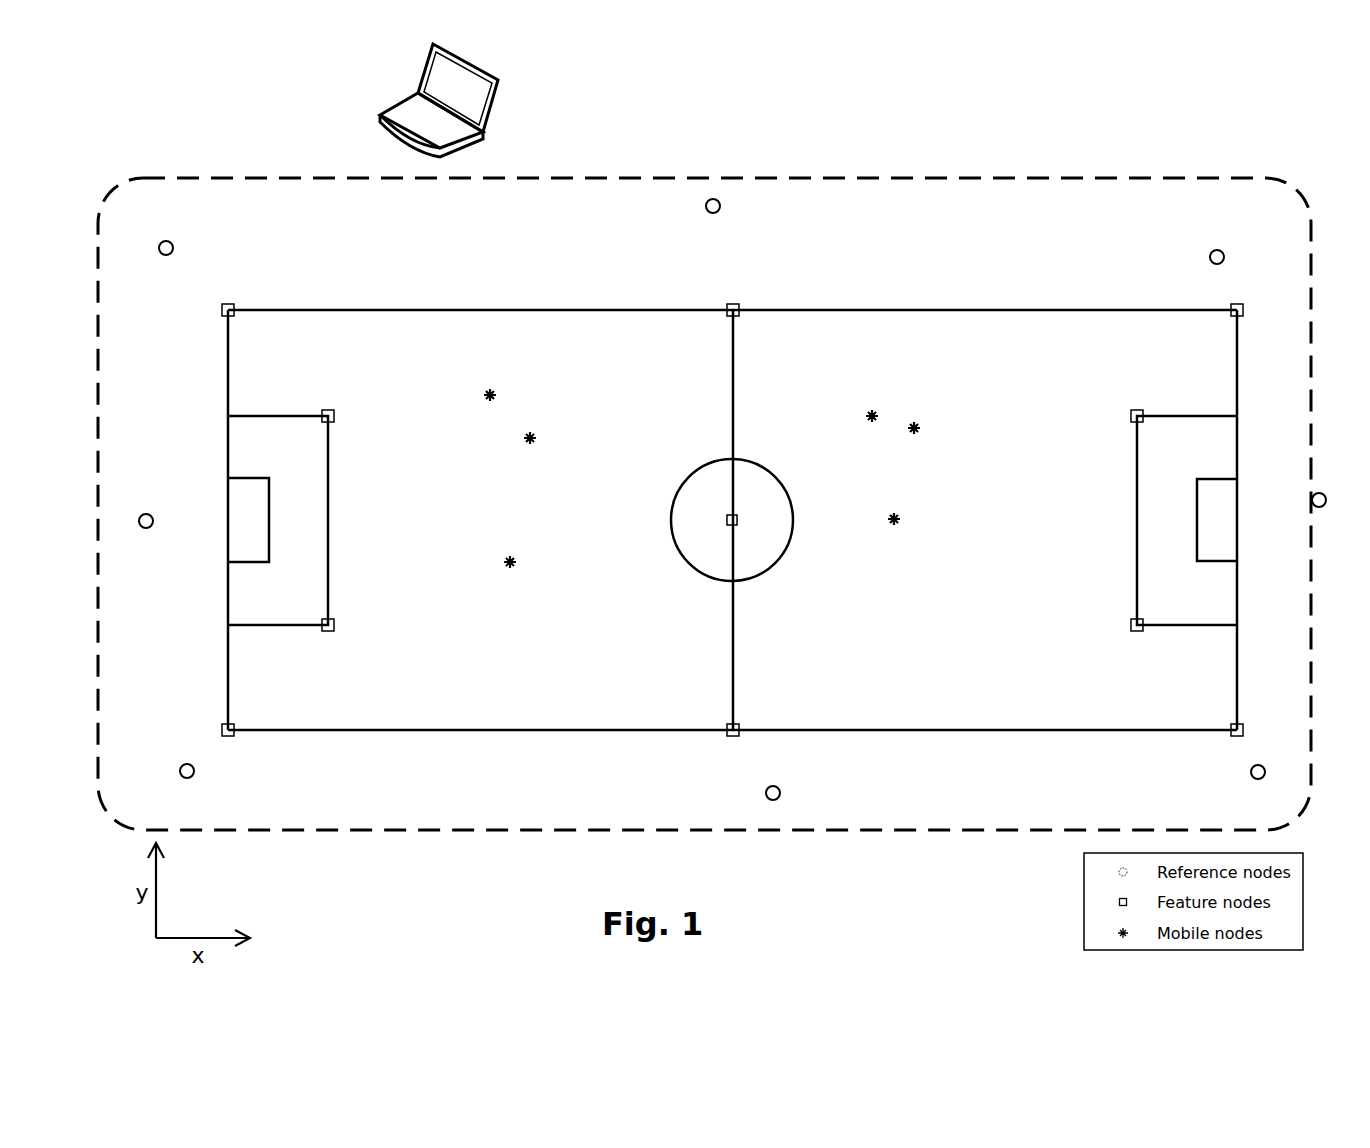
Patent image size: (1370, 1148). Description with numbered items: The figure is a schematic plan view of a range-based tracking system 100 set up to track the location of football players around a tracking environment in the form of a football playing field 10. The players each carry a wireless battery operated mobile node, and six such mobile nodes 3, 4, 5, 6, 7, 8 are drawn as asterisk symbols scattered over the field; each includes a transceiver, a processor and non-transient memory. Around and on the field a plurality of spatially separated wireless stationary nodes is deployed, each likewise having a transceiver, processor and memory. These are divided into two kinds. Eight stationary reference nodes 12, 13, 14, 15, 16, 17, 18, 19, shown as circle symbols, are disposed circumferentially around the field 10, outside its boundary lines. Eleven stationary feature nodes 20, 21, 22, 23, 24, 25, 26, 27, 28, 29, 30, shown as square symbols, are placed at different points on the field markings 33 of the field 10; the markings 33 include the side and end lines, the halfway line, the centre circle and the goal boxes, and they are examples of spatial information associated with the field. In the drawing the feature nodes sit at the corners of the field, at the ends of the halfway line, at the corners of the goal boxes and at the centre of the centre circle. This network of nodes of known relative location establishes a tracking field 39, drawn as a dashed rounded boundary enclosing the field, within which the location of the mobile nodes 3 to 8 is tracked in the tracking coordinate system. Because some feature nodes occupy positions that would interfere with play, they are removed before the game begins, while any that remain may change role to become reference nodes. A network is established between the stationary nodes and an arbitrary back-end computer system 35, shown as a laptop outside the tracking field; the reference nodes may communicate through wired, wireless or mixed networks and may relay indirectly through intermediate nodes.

The system 100 is at (809, 139).
The tracking field 39 is at (983, 176).
The football playing field 10 is at (767, 514).
The field markings 33 is at (469, 308).
The back-end computer system 35 is at (398, 100).
The mobile node 3 is at (491, 387).
The mobile node 4 is at (533, 430).
The mobile node 5 is at (513, 554).
The mobile node 6 is at (876, 408).
The mobile node 7 is at (916, 421).
The mobile node 8 is at (897, 511).
The stationary reference node 12 is at (168, 240).
The stationary reference node 13 is at (148, 513).
The stationary reference node 14 is at (187, 763).
The stationary reference node 15 is at (775, 785).
The stationary reference node 16 is at (1260, 764).
The stationary reference node 17 is at (1318, 492).
The stationary reference node 18 is at (1217, 249).
The stationary reference node 19 is at (713, 198).
The stationary feature node 20 is at (231, 304).
The stationary feature node 21 is at (330, 410).
The stationary feature node 22 is at (331, 618).
The stationary feature node 23 is at (232, 723).
The stationary feature node 24 is at (737, 723).
The stationary feature node 25 is at (740, 512).
The stationary feature node 26 is at (1234, 723).
The stationary feature node 27 is at (1137, 633).
The stationary feature node 28 is at (1135, 409).
The stationary feature node 29 is at (1239, 304).
The stationary feature node 30 is at (733, 304).